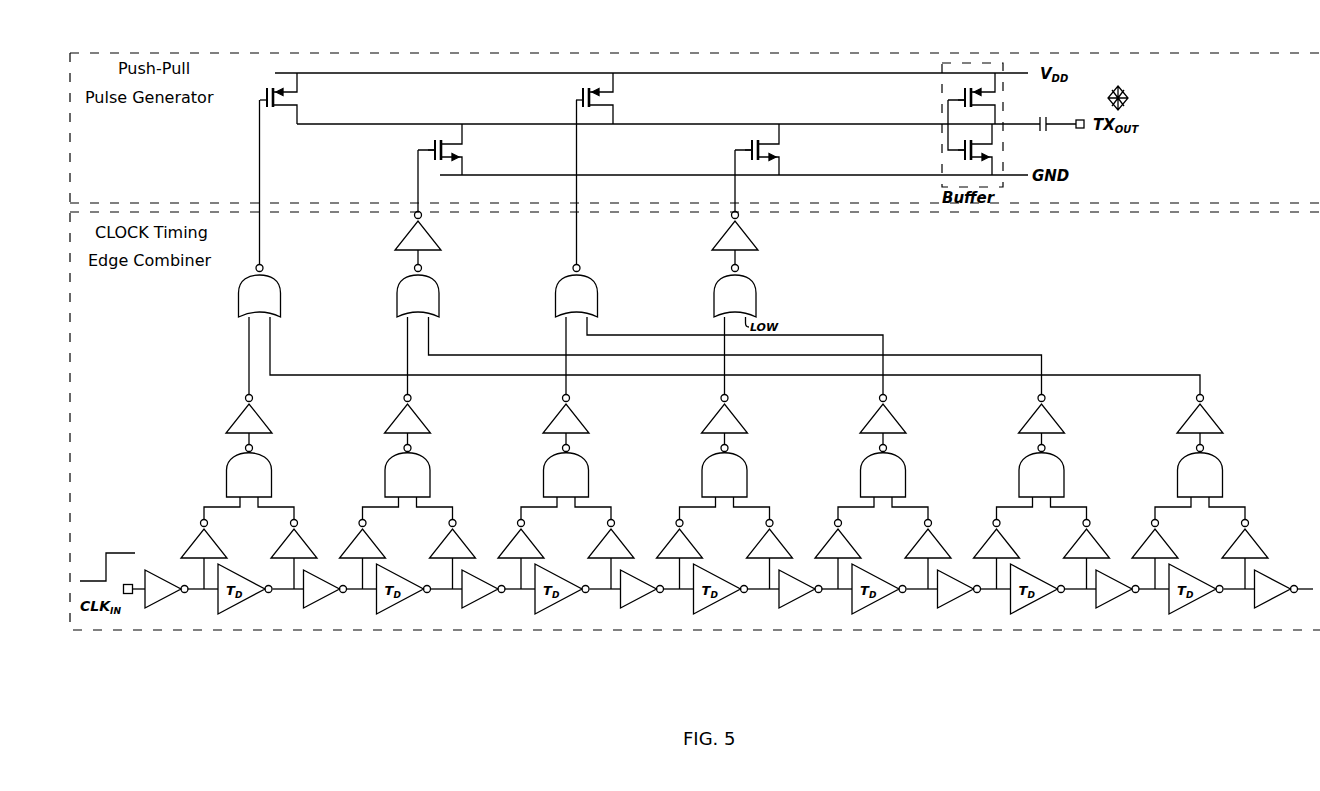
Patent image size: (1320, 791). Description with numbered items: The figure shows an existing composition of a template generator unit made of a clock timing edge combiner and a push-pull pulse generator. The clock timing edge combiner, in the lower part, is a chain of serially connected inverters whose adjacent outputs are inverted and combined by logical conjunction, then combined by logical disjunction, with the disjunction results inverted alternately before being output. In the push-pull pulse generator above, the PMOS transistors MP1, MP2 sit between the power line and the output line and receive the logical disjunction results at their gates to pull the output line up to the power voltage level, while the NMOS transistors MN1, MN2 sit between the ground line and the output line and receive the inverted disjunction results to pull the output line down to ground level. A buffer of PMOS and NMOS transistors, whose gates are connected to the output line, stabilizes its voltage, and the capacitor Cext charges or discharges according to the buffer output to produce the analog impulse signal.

The PMOS transistor MP1 is at (293, 169).
The PMOS transistor MP2 is at (610, 169).
The NMOS transistor MN1 is at (456, 168).
The NMOS transistor MN2 is at (773, 168).
The capacitor Cext is at (1055, 137).